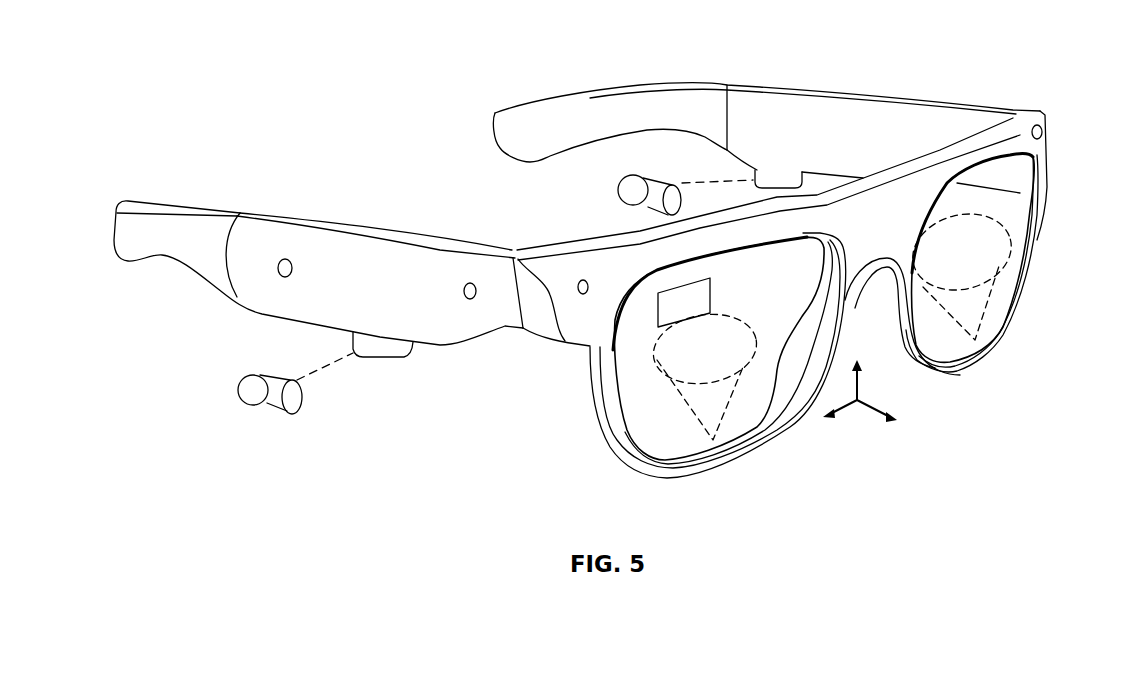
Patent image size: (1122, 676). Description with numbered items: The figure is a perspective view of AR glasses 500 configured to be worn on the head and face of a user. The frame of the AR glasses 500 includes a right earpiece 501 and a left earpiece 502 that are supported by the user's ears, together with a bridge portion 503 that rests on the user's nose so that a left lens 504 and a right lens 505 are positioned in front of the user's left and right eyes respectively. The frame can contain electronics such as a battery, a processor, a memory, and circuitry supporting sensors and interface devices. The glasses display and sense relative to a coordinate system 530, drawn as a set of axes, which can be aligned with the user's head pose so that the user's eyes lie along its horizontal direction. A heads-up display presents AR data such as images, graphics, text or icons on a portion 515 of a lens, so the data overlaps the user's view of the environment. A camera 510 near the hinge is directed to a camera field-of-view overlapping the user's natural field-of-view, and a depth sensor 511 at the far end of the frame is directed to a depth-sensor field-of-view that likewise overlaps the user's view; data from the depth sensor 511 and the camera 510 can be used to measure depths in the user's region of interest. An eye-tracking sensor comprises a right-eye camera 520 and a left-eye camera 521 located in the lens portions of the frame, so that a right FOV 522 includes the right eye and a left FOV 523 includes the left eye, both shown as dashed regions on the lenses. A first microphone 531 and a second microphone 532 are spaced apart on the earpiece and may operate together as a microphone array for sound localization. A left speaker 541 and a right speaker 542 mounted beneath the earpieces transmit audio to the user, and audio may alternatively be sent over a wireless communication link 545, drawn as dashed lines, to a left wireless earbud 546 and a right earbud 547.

The AR glasses 500 is at (188, 42).
The right earpiece 501 is at (357, 233).
The left earpiece 502 is at (880, 102).
The bridge portion 503 is at (863, 178).
The left lens 504 is at (937, 205).
The right lens 505 is at (733, 263).
The camera 510 is at (577, 287).
The depth sensor 511 is at (1038, 122).
The portion of a lens 515 is at (658, 320).
The right-eye camera 520 is at (715, 443).
The left-eye camera 521 is at (980, 349).
The right FOV 522 is at (655, 364).
The left FOV 523 is at (987, 215).
The coordinate system 530 is at (860, 402).
The first microphone 531 is at (465, 291).
The second microphone 532 is at (278, 268).
The left speaker 541 is at (778, 170).
The right speaker 542 is at (387, 360).
The wireless communication link 545 is at (320, 372).
The left wireless earbud 546 is at (662, 178).
The right earbud 547 is at (273, 413).